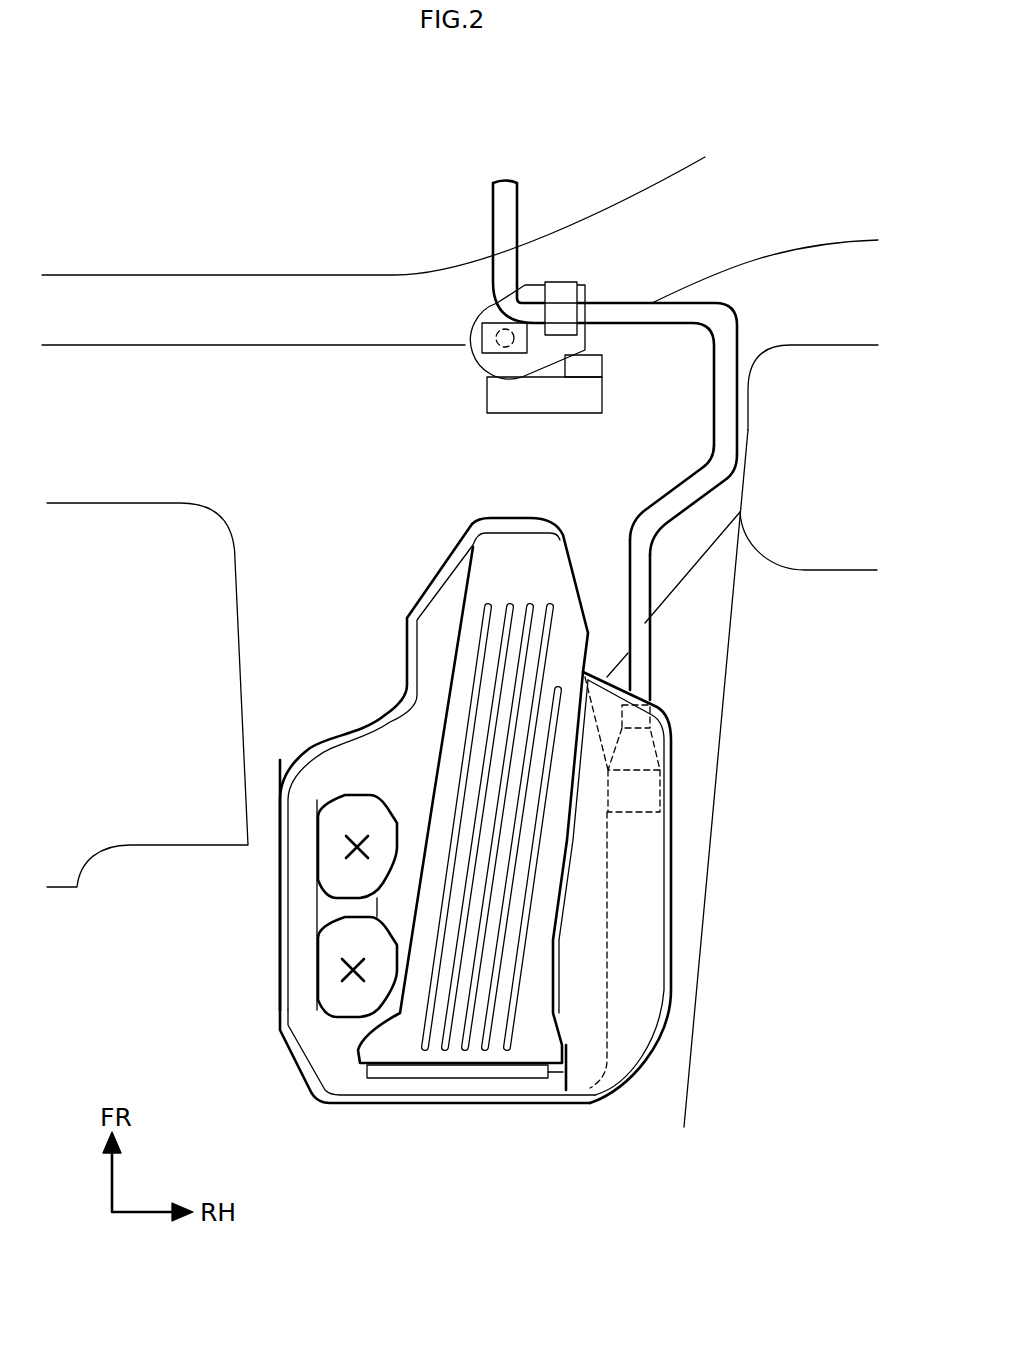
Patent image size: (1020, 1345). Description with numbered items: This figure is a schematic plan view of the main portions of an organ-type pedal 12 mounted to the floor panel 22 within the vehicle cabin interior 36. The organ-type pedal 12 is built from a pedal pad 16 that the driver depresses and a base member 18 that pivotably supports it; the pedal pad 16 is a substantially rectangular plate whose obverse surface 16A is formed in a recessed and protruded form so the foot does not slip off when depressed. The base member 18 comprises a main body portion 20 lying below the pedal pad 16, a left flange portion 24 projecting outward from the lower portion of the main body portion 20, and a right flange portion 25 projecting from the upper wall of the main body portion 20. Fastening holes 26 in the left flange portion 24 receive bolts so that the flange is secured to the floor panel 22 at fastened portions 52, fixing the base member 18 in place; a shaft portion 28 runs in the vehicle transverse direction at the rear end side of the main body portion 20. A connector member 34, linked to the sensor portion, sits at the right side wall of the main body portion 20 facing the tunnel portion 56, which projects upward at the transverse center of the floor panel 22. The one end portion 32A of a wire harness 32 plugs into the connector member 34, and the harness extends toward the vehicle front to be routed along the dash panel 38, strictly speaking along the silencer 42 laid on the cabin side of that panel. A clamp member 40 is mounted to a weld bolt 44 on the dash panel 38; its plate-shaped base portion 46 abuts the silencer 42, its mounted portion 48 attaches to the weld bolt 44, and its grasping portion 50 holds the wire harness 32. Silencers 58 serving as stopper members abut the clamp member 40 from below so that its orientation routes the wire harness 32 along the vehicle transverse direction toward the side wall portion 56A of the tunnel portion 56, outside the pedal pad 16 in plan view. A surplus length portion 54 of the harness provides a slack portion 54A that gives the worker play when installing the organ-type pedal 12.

The organ-type pedal 12 is at (676, 923).
The pedal pad 16 is at (454, 809).
The obverse surface 16A is at (473, 602).
The base member 18 is at (489, 810).
The main body portion 20 is at (437, 643).
The floor panel 22 is at (277, 757).
The left flange portion 24 is at (292, 940).
The right flange portion 25 is at (638, 867).
The fastening holes 26 is at (335, 880).
The shaft portion 28 is at (440, 1078).
The wire harness 32 is at (642, 580).
The one end portion 32A is at (638, 670).
The connector member 34 is at (642, 785).
The vehicle cabin interior 36 is at (147, 695).
The dash panel 38 is at (250, 367).
The clamp member 40 is at (560, 284).
The silencer 42 is at (325, 367).
The weld bolt 44 is at (490, 345).
The base portion 46 is at (490, 315).
The mounted portion 48 is at (485, 333).
The grasping portion 50 is at (563, 300).
The fastened portions 52 is at (342, 850).
The surplus length portion 54 is at (689, 441).
The slack portion 54A is at (720, 322).
The tunnel portion 56 is at (773, 463).
The side wall portion 56A is at (717, 502).
The silencers 58 is at (590, 404).